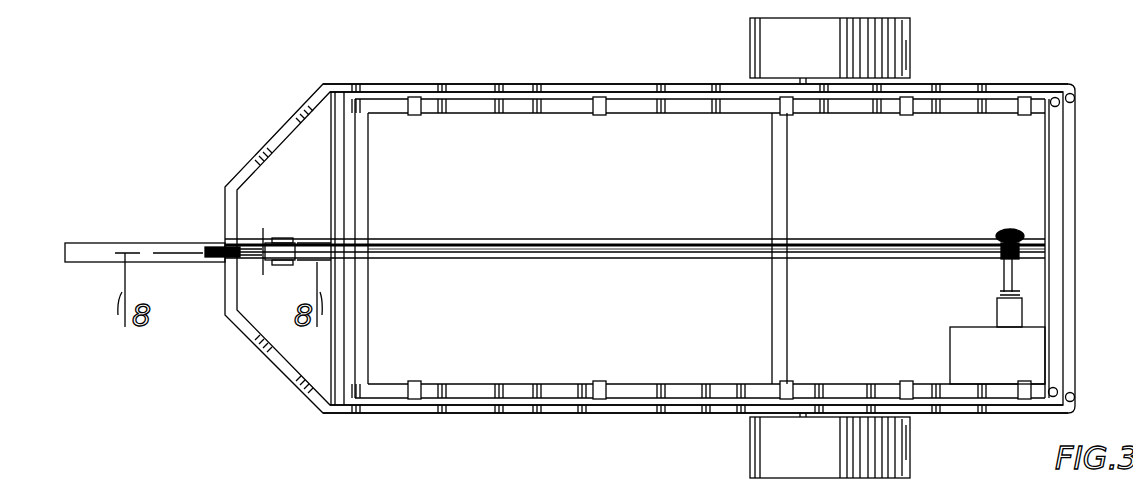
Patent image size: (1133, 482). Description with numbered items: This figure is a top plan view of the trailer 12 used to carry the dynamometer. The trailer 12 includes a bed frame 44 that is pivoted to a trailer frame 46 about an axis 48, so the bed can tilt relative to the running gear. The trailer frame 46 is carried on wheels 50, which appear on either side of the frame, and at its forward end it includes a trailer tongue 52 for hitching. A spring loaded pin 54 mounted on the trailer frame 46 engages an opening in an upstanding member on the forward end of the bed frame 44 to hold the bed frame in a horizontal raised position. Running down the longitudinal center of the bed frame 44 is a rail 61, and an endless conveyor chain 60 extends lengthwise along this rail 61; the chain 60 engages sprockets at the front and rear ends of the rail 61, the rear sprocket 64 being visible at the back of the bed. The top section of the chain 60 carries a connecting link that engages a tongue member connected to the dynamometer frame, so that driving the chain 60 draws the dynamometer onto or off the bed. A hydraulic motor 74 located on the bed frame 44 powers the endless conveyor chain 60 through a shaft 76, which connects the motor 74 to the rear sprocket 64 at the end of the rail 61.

The trailer 12 is at (238, 170).
The bed frame 44 is at (548, 86).
The trailer frame 46 is at (453, 107).
The axis 48 is at (803, 82).
The wheels 50 is at (760, 28).
The trailer tongue 52 is at (140, 245).
The spring loaded pin 54 is at (187, 243).
The endless conveyor chain 60 is at (625, 262).
The rail 61 is at (557, 262).
The sprocket 64 is at (1008, 278).
The hydraulic motor 74 is at (995, 308).
The shaft 76 is at (997, 290).